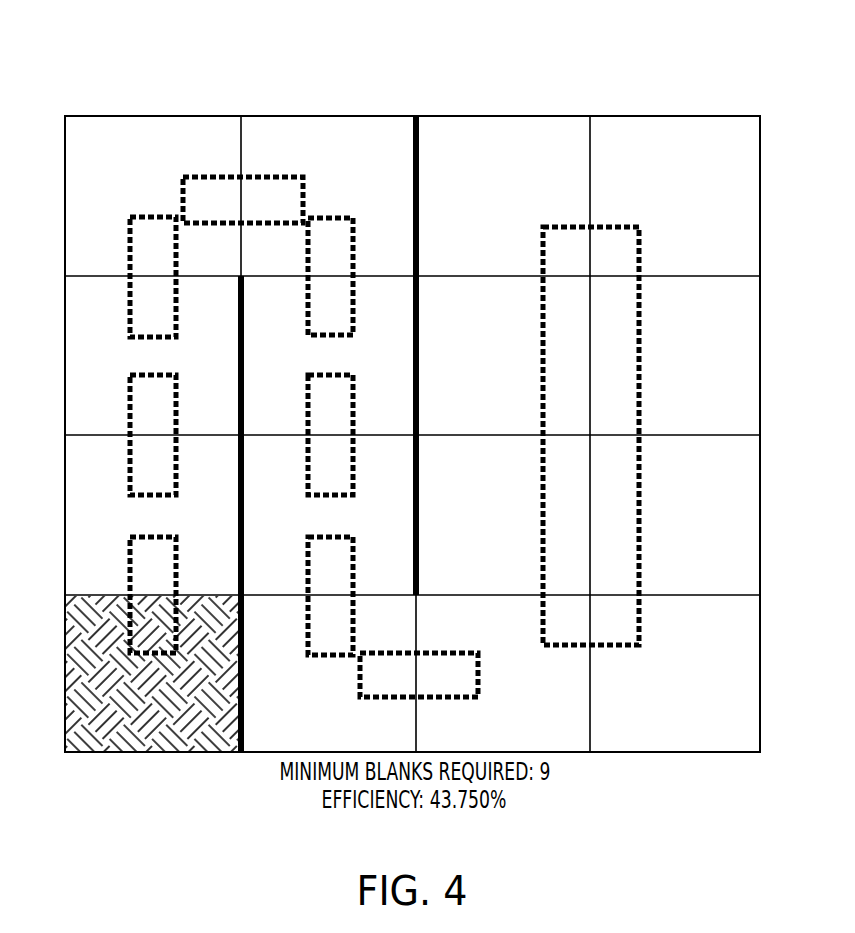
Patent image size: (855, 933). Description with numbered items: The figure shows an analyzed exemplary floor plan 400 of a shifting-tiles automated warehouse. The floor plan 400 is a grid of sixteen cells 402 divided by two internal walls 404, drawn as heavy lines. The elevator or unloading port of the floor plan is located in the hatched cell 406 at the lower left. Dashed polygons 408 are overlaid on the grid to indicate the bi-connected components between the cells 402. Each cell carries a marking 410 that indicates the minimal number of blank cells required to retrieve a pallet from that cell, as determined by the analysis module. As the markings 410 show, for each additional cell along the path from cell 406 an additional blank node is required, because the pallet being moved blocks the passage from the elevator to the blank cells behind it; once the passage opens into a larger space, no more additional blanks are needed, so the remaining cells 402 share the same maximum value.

The floor plan 400 is at (119, 80).
The cells 402 is at (93, 178).
The internal walls 404 is at (418, 135).
The cell 406 is at (140, 737).
The polygons 408 is at (354, 294).
The markings 410 is at (93, 355).